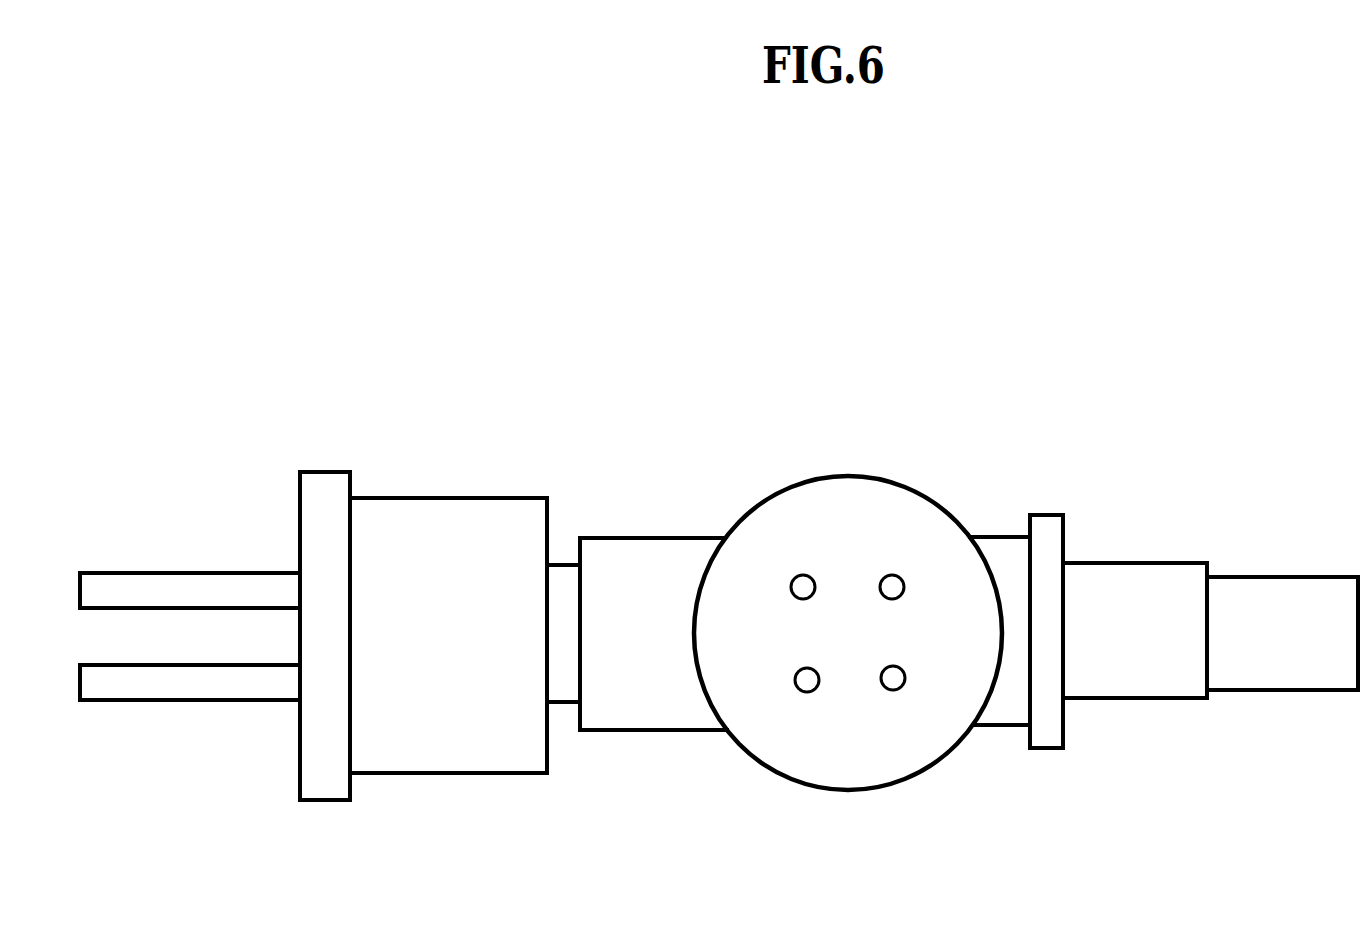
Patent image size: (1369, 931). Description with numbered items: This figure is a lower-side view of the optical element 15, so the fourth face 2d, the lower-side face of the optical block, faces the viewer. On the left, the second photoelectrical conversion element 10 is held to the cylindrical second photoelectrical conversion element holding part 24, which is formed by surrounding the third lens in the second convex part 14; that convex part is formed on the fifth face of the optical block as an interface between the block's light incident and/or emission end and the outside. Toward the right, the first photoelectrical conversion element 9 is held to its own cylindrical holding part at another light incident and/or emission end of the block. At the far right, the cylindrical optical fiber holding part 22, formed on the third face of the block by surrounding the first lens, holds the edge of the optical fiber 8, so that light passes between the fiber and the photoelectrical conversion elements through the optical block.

The optical element 15 is at (268, 338).
The second photoelectrical conversion element 10 is at (183, 570).
The second photoelectrical conversion element holding part 24 is at (435, 498).
The second convex part 14 is at (548, 657).
The fourth face 2d is at (667, 563).
The first photoelectrical conversion element 9 is at (848, 792).
The optical fiber holding part 22 is at (1123, 563).
The optical fiber 8 is at (1257, 577).